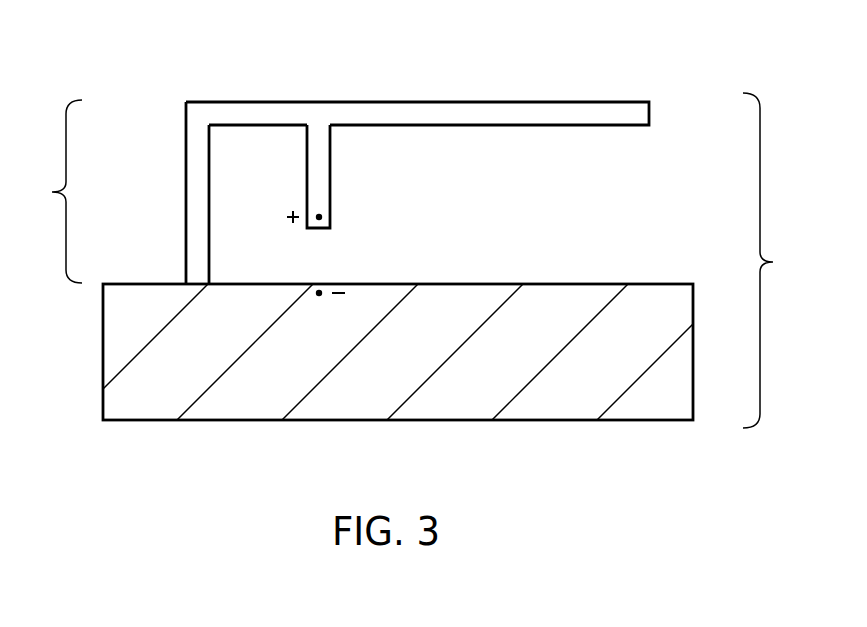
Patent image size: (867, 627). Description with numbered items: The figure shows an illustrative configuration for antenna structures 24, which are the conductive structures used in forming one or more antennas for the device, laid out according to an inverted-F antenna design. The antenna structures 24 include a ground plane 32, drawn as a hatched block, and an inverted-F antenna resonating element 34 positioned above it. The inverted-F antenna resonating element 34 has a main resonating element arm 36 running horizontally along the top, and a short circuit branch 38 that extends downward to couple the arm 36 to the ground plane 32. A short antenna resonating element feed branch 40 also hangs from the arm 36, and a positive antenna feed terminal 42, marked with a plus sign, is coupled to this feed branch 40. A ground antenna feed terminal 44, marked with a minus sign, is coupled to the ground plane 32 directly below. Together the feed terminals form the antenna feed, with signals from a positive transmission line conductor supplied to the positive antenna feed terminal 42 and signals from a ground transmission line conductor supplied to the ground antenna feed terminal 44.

The antenna structures 24 is at (773, 260).
The ground plane 32 is at (115, 355).
The inverted-F antenna resonating element 34 is at (52, 191).
The arm 36 is at (447, 110).
The short circuit branch 38 is at (202, 210).
The antenna resonating element feed branch 40 is at (323, 170).
The positive antenna feed terminal 42 is at (330, 219).
The ground antenna feed terminal 44 is at (318, 298).